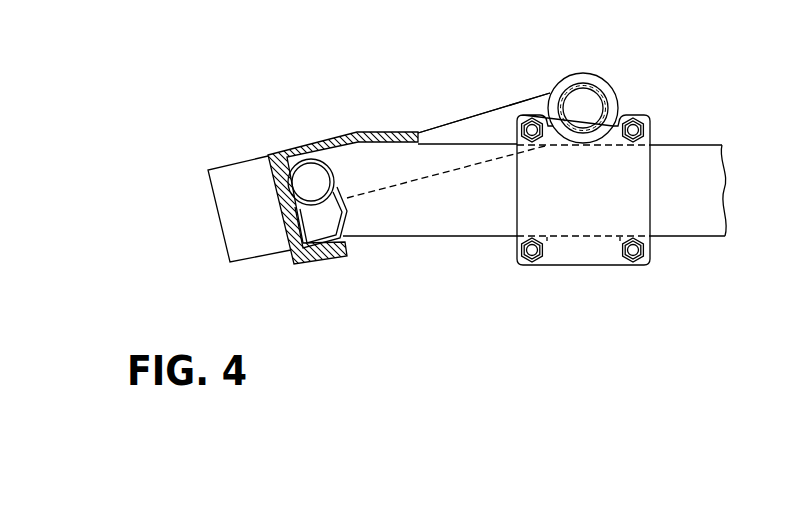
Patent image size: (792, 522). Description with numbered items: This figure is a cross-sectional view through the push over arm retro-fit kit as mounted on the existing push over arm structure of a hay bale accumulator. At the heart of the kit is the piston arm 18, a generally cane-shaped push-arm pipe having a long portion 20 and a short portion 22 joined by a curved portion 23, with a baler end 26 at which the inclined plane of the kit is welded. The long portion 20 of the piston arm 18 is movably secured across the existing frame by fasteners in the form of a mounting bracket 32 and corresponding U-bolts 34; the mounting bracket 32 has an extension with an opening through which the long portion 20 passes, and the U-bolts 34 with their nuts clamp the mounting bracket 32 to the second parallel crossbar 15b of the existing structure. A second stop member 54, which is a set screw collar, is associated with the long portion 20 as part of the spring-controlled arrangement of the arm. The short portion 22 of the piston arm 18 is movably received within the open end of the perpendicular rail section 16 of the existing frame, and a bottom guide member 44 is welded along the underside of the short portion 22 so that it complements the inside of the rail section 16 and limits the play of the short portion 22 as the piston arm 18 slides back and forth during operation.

The rail section 16 is at (263, 168).
The piston arm 18 is at (434, 122).
The short portion 22 is at (328, 165).
The bottom guide member 44 is at (348, 219).
The curved portion 23 is at (505, 102).
The baler end 26 is at (457, 76).
The second parallel crossbar 15b is at (694, 202).
The mounting bracket 32 is at (582, 266).
The U-bolts 34 is at (543, 249).
The second stop member 54 is at (610, 92).
The long portion 20 is at (583, 86).